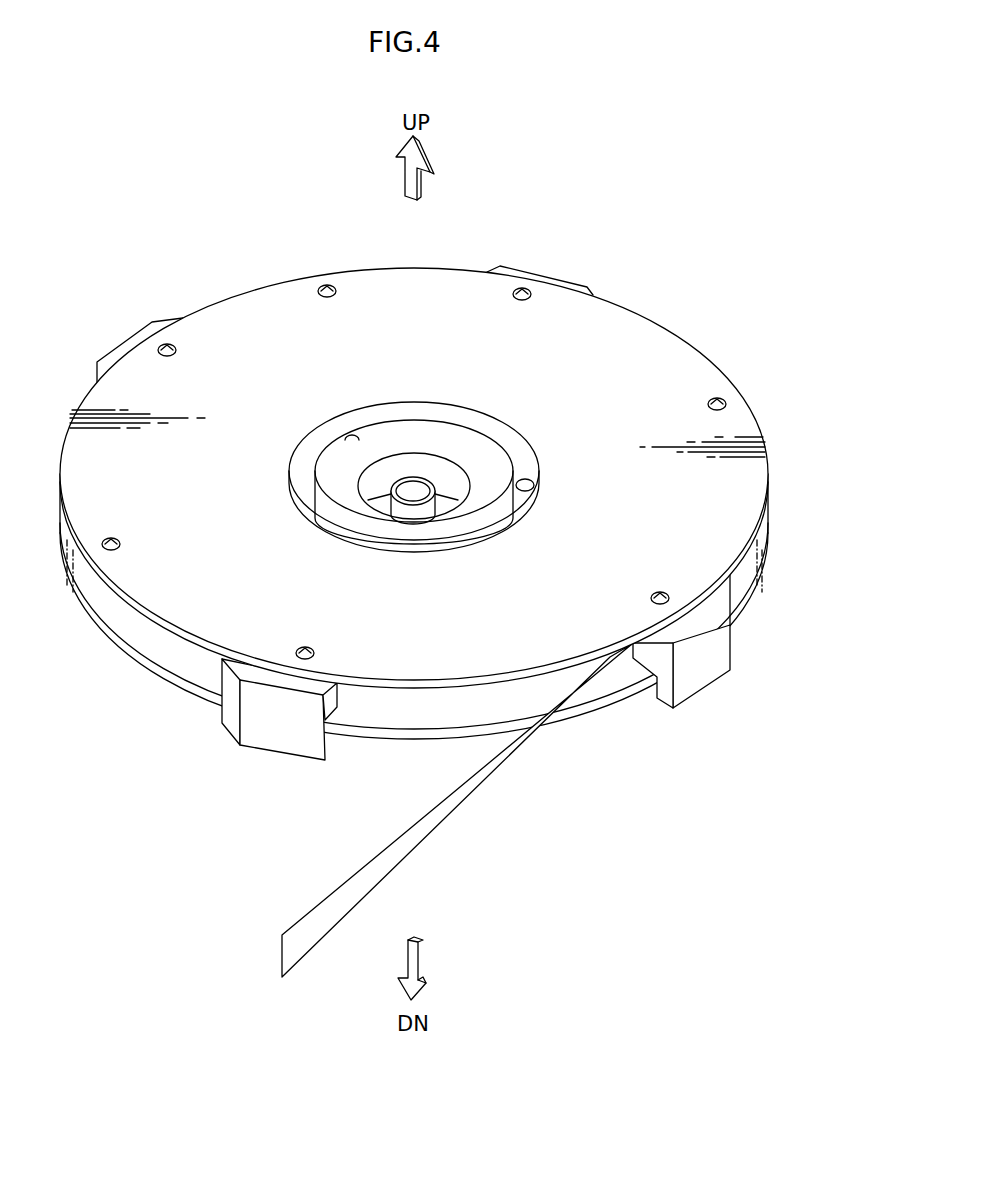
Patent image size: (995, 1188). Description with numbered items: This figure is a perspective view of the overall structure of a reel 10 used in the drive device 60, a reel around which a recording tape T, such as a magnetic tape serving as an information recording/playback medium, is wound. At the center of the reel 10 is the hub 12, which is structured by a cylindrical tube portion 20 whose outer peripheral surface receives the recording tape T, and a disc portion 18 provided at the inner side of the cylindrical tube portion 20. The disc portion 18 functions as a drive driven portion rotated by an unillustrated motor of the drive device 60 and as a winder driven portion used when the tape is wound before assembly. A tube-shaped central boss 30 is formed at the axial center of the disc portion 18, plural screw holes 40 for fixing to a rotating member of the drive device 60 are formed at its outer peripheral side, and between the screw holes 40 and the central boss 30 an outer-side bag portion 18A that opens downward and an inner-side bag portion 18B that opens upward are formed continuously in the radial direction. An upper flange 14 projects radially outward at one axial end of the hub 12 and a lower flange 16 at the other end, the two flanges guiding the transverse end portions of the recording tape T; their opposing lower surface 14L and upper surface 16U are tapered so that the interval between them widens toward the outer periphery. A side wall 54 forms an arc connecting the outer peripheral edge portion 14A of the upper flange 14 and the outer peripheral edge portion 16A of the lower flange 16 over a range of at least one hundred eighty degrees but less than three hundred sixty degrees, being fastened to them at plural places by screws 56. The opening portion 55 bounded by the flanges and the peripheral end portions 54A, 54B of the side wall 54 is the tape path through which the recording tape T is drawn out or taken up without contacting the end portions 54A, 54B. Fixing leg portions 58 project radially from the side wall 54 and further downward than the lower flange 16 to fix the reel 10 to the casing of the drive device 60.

The reel 10 is at (674, 250).
The drive device 60 is at (414, 604).
The hub 12 is at (423, 338).
The upper flange 14 is at (421, 697).
The outer peripheral edge portion of the upper flange 14A is at (156, 625).
The lower surface of the upper flange 14L is at (445, 690).
The lower flange 16 is at (365, 750).
The outer peripheral edge portion of the lower flange 16A is at (148, 664).
The upper surface of the lower flange 16U is at (610, 692).
The disc portion 18 is at (388, 431).
The outer-side bag portion 18A is at (437, 437).
The inner-side bag portion 18B is at (446, 505).
The cylindrical tube portion 20 is at (420, 399).
The central boss 30 is at (426, 487).
The screw holes 40 is at (350, 435).
The side wall 54 is at (180, 668).
The peripheral direction end portion of the side wall 54A is at (345, 692).
The peripheral direction end portion of the side wall 54B is at (652, 648).
The opening portion 55 is at (492, 691).
The screws 56 is at (658, 590).
The fixing leg portions 58 is at (545, 274).
The recording tape T is at (416, 835).